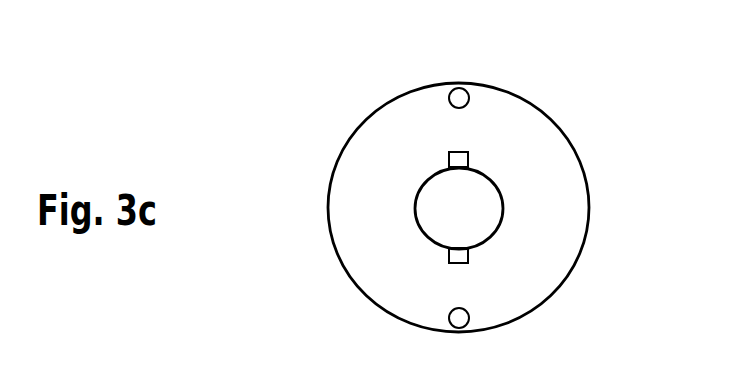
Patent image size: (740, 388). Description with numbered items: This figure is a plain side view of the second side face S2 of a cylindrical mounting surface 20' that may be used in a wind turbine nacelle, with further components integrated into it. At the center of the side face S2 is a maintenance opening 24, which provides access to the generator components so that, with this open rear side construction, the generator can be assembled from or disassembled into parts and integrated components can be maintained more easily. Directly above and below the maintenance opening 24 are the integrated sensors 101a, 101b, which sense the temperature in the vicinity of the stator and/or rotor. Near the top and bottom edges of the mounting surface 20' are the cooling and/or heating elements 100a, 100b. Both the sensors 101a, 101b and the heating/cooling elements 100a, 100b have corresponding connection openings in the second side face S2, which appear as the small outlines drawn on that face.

The mounting surface 20' is at (491, 207).
The second side face S2 is at (512, 124).
The maintenance opening 24 is at (473, 220).
The integrated sensor 101a is at (468, 158).
The integrated sensor 101b is at (468, 258).
The cooling and/or heating element 100a is at (459, 95).
The cooling and/or heating element 100b is at (459, 322).